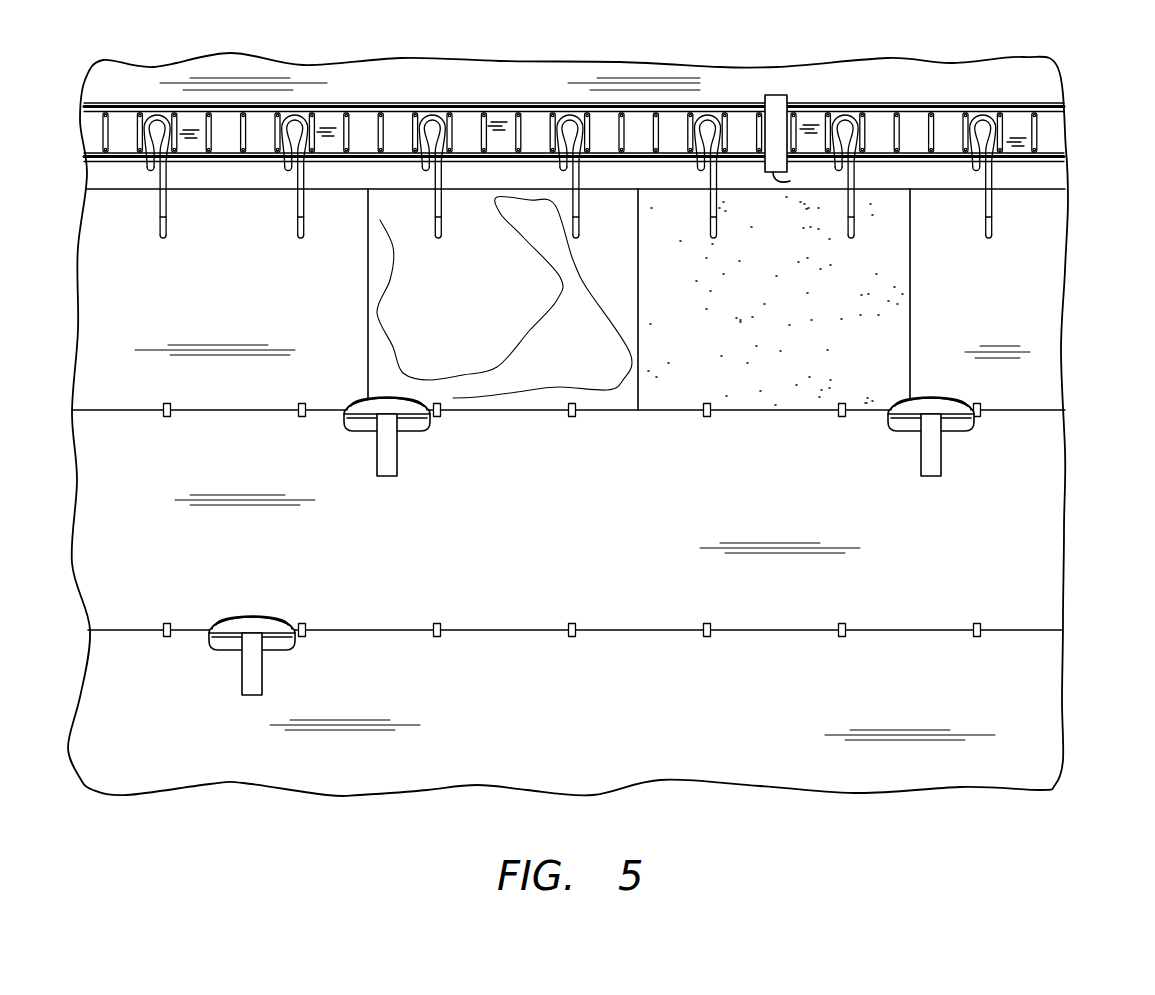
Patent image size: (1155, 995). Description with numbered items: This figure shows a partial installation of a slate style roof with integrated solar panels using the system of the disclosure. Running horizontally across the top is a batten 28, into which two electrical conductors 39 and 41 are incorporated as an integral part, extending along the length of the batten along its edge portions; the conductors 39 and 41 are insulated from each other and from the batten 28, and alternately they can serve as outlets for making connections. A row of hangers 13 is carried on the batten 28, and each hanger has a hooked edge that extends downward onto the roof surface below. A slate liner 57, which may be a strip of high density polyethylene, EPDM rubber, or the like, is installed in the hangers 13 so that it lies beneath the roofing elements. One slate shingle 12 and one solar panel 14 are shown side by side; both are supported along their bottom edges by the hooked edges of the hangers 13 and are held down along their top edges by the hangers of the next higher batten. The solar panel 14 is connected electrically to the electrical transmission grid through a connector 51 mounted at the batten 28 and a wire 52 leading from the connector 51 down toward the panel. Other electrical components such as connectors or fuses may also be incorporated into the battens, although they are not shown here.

The slate shingle 12 is at (505, 373).
The hangers 13 is at (575, 223).
The solar panel 14 is at (677, 220).
The batten 28 is at (537, 127).
The electrical conductor 39 is at (1022, 105).
The electrical conductor 41 is at (1022, 162).
The connector 51 is at (773, 86).
The wire 52 is at (787, 182).
The slate liner 57 is at (175, 319).